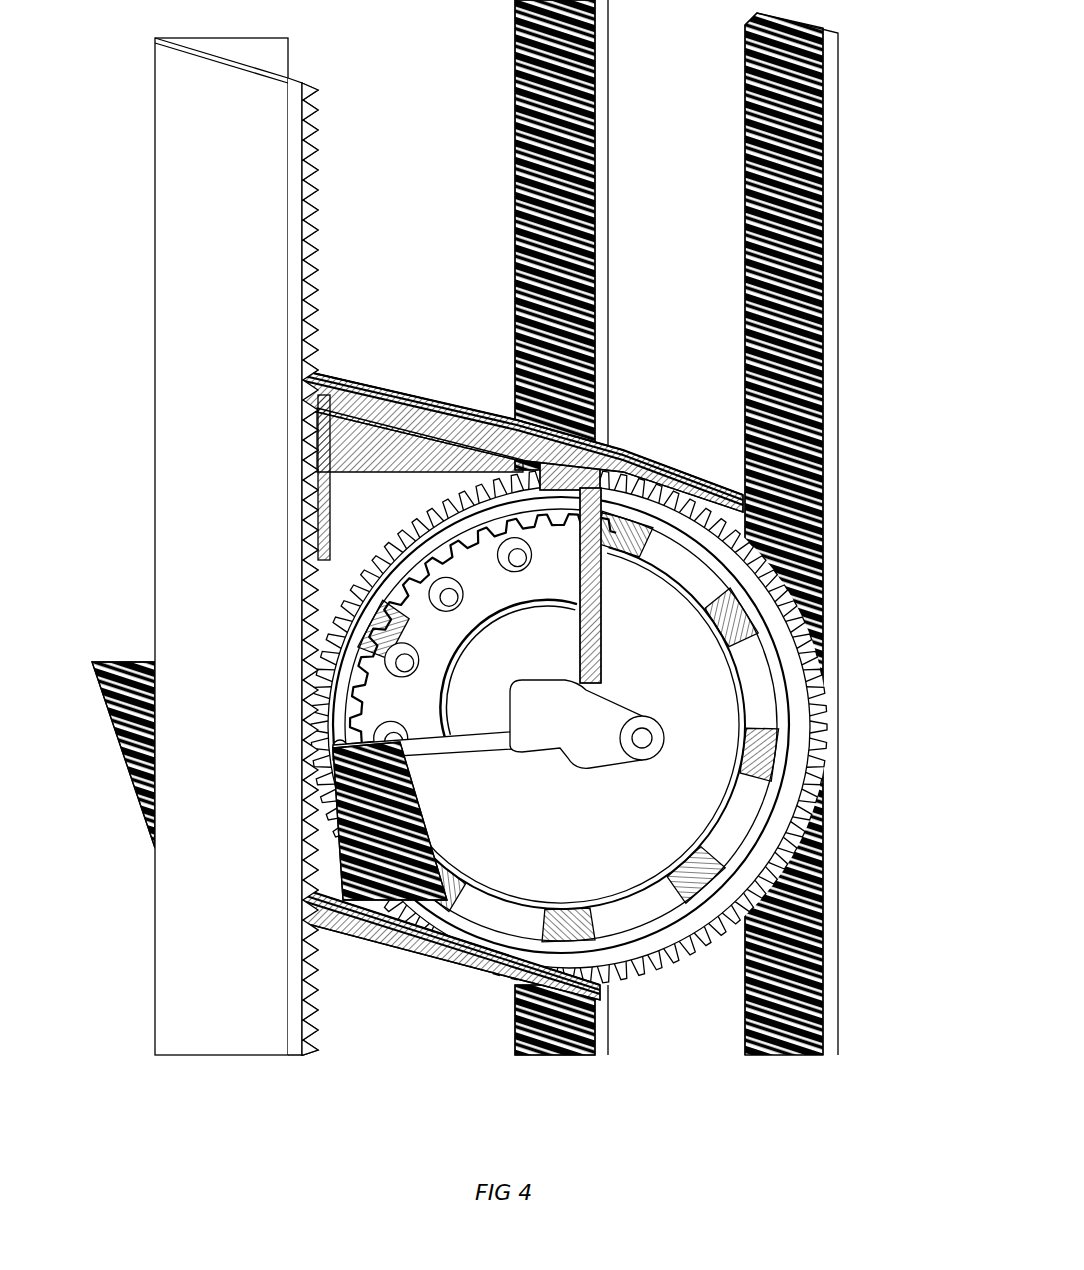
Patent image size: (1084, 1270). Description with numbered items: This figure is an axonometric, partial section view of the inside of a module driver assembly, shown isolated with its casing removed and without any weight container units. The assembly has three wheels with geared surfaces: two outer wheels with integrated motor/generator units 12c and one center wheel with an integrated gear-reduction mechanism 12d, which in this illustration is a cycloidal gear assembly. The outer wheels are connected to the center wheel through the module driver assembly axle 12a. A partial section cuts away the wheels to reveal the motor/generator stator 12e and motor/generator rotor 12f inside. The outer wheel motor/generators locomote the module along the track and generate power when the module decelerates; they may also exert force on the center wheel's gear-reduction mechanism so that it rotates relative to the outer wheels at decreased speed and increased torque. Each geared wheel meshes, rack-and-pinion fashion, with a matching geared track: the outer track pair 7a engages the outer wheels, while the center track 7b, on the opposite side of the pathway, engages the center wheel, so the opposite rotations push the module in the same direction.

The load bearing track—outer track pair 7a is at (610, 277).
The load bearing track—center track 7b is at (292, 74).
The module driver assembly axle 12a is at (588, 717).
The module driver assembly wheels with integrated motor/generator units 12c is at (125, 795).
The module driver assembly wheels with integrated gear-reduction mechanism 12d is at (360, 935).
The module driver assembly motor/generator stator 12e is at (712, 730).
The module driver assembly motor/generator rotor 12f is at (762, 668).